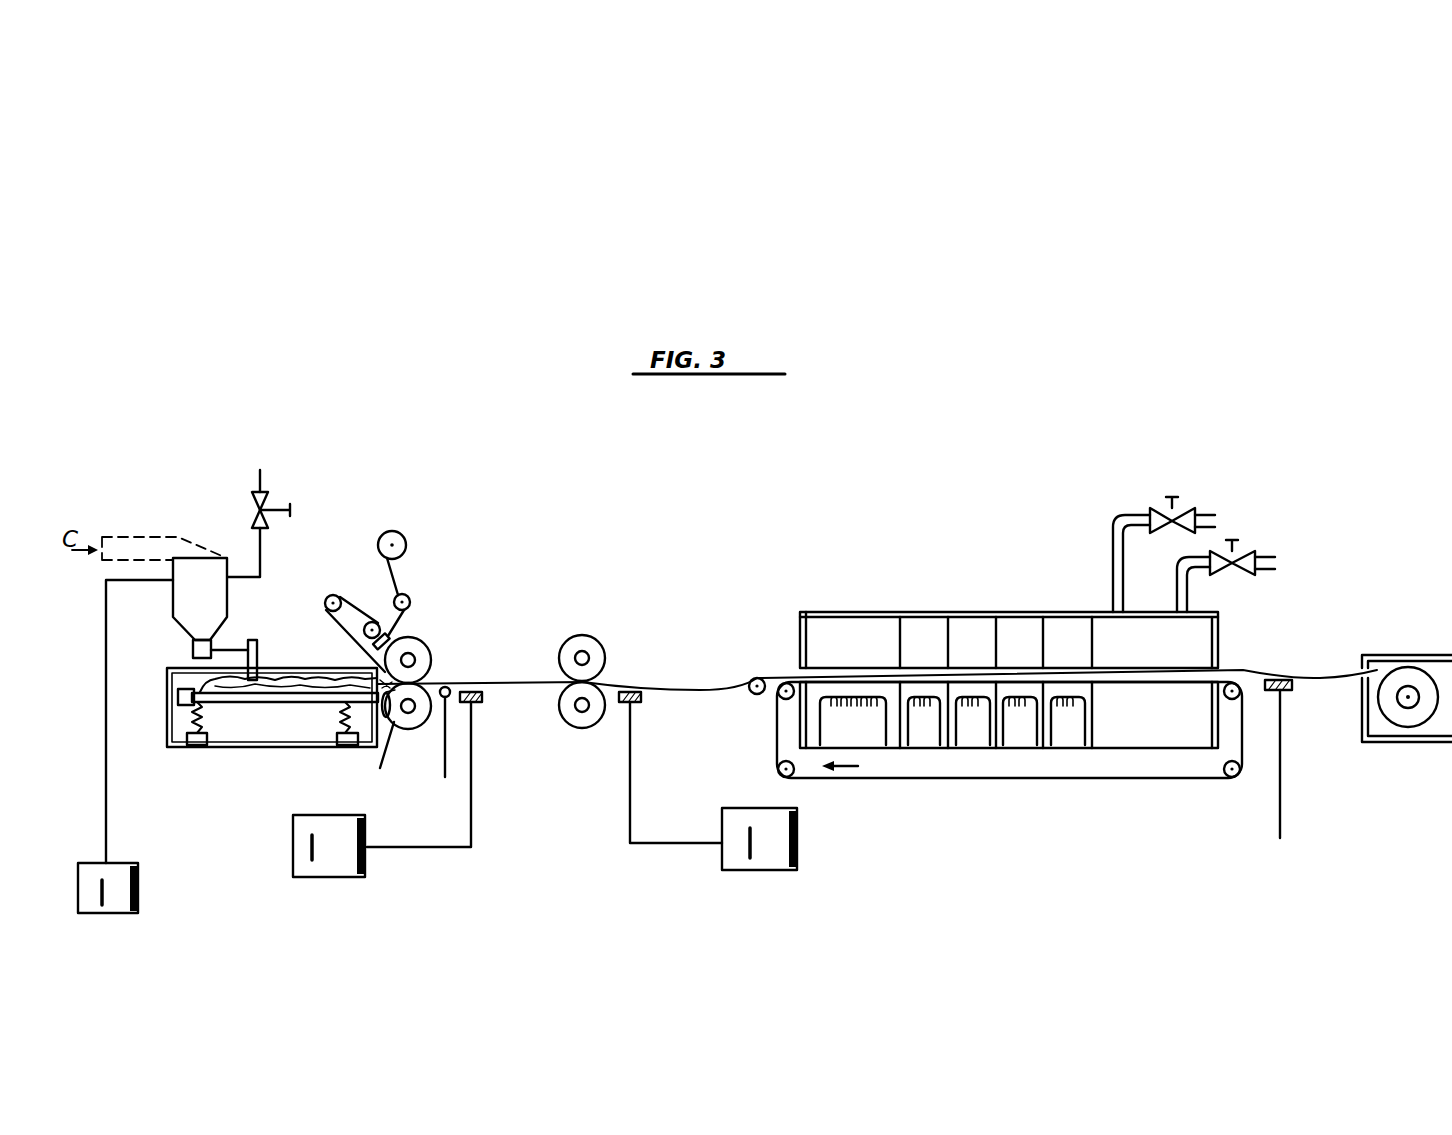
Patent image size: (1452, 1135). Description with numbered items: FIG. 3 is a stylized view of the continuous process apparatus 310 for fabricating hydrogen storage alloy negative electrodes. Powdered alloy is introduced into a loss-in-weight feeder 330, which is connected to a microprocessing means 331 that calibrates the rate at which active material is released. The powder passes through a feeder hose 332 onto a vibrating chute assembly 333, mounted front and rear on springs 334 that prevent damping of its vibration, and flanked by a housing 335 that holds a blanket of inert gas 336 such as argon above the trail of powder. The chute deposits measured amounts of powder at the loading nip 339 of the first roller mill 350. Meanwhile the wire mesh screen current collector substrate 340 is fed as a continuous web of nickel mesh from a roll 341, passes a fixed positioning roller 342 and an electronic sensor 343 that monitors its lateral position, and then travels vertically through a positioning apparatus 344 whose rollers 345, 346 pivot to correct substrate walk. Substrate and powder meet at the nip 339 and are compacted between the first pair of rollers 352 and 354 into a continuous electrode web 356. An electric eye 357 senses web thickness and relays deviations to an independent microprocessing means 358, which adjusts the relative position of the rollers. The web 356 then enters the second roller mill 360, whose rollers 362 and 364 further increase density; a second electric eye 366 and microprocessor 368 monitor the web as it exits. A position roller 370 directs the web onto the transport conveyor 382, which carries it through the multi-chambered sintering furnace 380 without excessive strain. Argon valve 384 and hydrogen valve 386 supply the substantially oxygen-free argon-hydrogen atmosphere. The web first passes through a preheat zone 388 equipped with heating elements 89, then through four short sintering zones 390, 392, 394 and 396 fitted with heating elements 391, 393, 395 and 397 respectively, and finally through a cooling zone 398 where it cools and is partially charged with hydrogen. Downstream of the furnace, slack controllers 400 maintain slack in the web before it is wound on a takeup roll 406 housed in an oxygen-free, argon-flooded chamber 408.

The continuous process apparatus 310 is at (1338, 496).
The loss-in-weight feeder 330 is at (200, 578).
The microprocessing means 331 is at (132, 898).
The feeder hose 332 is at (257, 662).
The vibrating chute assembly 333 is at (228, 696).
The springs 334 is at (192, 718).
The housing 335 is at (253, 749).
The blanket of inert gas 336 is at (205, 680).
The loading nip 339 is at (370, 760).
The wire mesh screen current collector substrate 340 is at (402, 566).
The roll 341 is at (394, 540).
The fixed positioning roller 342 is at (410, 597).
The electronic sensor 343 is at (395, 628).
The positioning apparatus 344 is at (350, 646).
The roller 345 is at (370, 620).
The roller 346 is at (328, 596).
The first roller mill 350 is at (448, 630).
The roller 352 is at (434, 656).
The roller 354 is at (421, 717).
The electrode web 356 is at (465, 688).
The electric eye 357 is at (480, 701).
The independent microprocessing means 358 is at (338, 868).
The second roller mill 360 is at (582, 624).
The roller 362 is at (606, 650).
The roller 364 is at (598, 727).
The second electric eye apparatus 366 is at (641, 705).
The second microprocessing means 368 is at (789, 865).
The position roller 370 is at (756, 694).
The multi-chambered sintering furnace 380 is at (1053, 560).
The transport conveyor 382 is at (776, 737).
The argon valve 384 is at (1218, 520).
The hydrogen valve 386 is at (1280, 565).
The first preheat zone 388 is at (850, 632).
The short sintering zone 390 is at (928, 637).
The heating elements 391 is at (912, 730).
The short sintering zone 392 is at (970, 630).
The heating elements 393 is at (963, 733).
The short sintering zone 394 is at (1015, 632).
The heating elements 395 is at (1005, 732).
The short sintering zone 396 is at (1066, 625).
The heating elements 397 is at (1052, 730).
The cooling zone 398 is at (1202, 638).
The slack controllers 400 is at (1280, 807).
The takeup roll 406 is at (1427, 723).
The chamber 408 is at (1421, 662).
The heating elements 89 is at (823, 723).